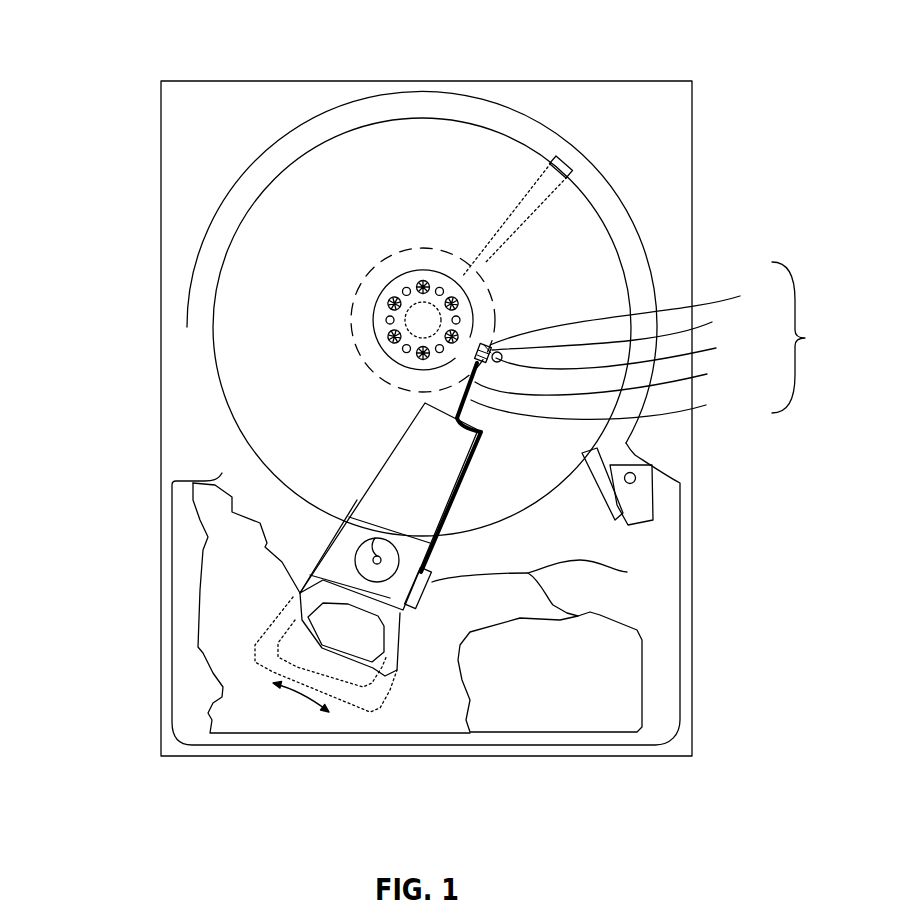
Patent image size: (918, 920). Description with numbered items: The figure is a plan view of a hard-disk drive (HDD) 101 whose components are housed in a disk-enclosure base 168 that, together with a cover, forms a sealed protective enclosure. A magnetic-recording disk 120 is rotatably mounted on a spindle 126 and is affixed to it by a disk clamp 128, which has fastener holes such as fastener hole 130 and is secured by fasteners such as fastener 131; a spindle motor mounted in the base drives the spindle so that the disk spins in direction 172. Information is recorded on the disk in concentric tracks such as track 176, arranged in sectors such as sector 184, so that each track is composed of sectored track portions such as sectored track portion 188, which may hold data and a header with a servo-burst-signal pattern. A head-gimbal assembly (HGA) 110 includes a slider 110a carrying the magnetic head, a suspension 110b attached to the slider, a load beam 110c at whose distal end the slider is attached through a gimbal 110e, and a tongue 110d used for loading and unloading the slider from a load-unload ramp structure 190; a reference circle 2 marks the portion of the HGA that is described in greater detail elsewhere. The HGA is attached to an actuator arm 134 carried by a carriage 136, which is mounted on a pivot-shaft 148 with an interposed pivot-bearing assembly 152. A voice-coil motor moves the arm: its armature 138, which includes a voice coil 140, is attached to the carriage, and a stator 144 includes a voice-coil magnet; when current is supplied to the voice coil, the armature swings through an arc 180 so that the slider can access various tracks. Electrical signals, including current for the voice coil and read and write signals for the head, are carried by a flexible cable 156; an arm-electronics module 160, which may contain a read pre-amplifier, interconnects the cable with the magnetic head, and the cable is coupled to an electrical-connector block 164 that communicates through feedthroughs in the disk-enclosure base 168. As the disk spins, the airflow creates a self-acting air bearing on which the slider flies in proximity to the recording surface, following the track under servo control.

The hard-disk drive 101 is at (155, 60).
The magnetic-recording disk 120 is at (290, 338).
The disk clamp 128 is at (373, 318).
The spindle 126 is at (414, 283).
The fastener hole 130 is at (420, 317).
The fastener 131 is at (427, 281).
The track 176 is at (366, 365).
The sectored track portion 188 is at (485, 262).
The sector 184 is at (565, 156).
The reference circle 2 is at (495, 333).
The head-gimbal assembly 110 is at (807, 337).
The slider 110a is at (629, 352).
The suspension 110b is at (614, 379).
The load beam 110c is at (611, 406).
The tongue 110d is at (636, 312).
The gimbal 110e is at (624, 330).
The direction 172 is at (540, 494).
The actuator arm 134 is at (418, 463).
The carriage 136 is at (358, 527).
The pivot-shaft 148 is at (347, 537).
The pivot-bearing assembly 152 is at (390, 558).
The arm-electronics module 160 is at (430, 582).
The voice coil 140 is at (387, 657).
The armature 138 is at (398, 627).
The arc 180 is at (300, 700).
The load-unload ramp structure 190 is at (638, 500).
The flexible cable 156 is at (627, 572).
The electrical-connector block 164 is at (617, 690).
The stator 144 is at (213, 662).
The disk-enclosure base 168 is at (170, 745).